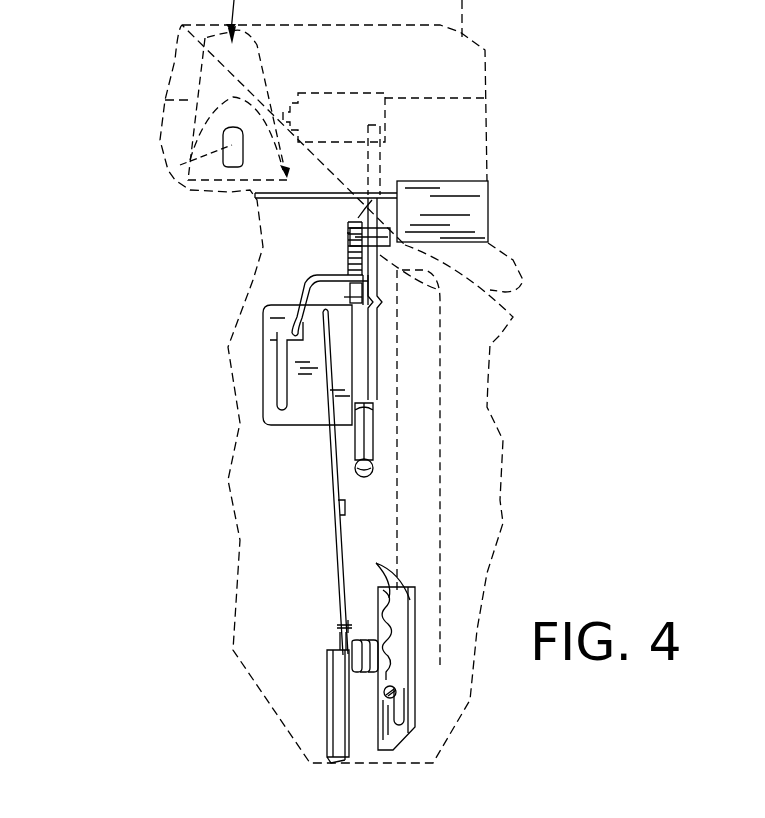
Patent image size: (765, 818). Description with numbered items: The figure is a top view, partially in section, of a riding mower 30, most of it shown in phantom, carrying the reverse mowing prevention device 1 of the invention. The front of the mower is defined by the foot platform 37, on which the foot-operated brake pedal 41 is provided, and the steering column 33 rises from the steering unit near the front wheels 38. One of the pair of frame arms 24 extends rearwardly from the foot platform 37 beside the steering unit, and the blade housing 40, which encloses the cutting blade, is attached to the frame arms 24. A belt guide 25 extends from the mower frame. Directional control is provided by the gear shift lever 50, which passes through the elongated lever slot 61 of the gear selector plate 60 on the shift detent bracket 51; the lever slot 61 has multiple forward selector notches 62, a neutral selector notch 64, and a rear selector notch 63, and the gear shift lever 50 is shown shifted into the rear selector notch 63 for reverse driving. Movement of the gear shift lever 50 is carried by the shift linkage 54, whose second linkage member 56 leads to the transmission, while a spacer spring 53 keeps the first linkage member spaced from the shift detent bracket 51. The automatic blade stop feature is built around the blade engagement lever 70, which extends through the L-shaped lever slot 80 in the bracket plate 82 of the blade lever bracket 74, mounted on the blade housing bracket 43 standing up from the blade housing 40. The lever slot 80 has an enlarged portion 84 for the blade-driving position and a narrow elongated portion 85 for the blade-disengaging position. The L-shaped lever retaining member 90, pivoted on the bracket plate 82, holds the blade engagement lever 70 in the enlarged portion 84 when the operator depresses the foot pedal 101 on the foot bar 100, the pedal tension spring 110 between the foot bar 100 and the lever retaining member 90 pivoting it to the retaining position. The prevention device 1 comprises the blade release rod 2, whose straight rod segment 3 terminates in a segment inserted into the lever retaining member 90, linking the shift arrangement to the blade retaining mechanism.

The reverse mowing prevention device 1 is at (270, 503).
The blade release rod 2 is at (320, 535).
The straight rod segment 3 is at (335, 568).
The frame arms 24 is at (432, 467).
The belt guide 25 is at (350, 522).
The riding mower 30 is at (495, 82).
The steering column 33 is at (182, 167).
The foot platform 37 is at (182, 48).
The front wheels 38 is at (512, 258).
The blade housing 40 is at (487, 395).
The brake pedal 41 is at (340, 93).
The blade housing bracket 43 is at (440, 417).
The gear shift lever 50 is at (396, 693).
The shift detent bracket 51 is at (420, 755).
The spacer spring 53 is at (345, 625).
The shift linkage 54 is at (315, 696).
The second linkage member 56 is at (328, 737).
The gear selector plate 60 is at (425, 582).
The lever slot 61 is at (415, 637).
The forward selector notches 62 is at (380, 567).
The rear selector notch 63 is at (417, 730).
The neutral selector notch 64 is at (392, 702).
The blade engagement lever 70 is at (373, 422).
The blade lever bracket 74 is at (275, 290).
The lever slot 80 is at (270, 390).
The bracket plate 82 is at (297, 410).
The enlarged portion 84 is at (283, 333).
The elongated portion 85 is at (290, 350).
The lever retaining member 90 is at (348, 330).
The foot bar 100 is at (349, 205).
The foot pedal 101 is at (415, 181).
The pedal tension spring 110 is at (350, 262).